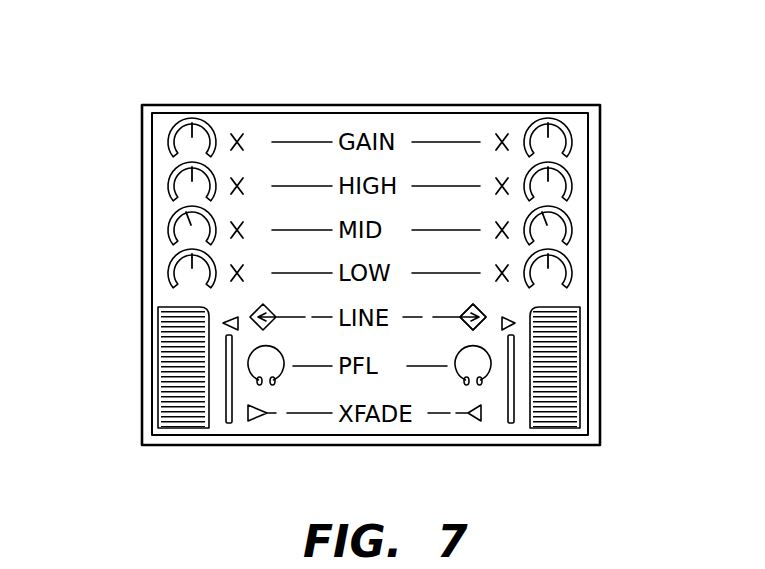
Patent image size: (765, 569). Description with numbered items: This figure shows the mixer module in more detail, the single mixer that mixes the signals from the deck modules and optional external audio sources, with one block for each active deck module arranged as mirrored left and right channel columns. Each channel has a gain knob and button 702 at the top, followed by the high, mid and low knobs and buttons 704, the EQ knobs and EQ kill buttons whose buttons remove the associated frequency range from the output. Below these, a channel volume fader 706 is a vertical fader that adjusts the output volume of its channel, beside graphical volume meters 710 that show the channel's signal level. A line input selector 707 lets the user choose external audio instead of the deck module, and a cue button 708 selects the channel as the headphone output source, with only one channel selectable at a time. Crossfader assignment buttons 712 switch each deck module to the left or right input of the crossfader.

The gain knob and button 702 is at (248, 87).
The high, mid and low knobs and buttons 704 is at (117, 128).
The channel volume fader 706 is at (225, 412).
The line input selector 707 is at (483, 312).
The cue button 708 is at (480, 383).
The graphical volume meters 710 is at (576, 384).
The crossfader assignment buttons 712 is at (470, 416).